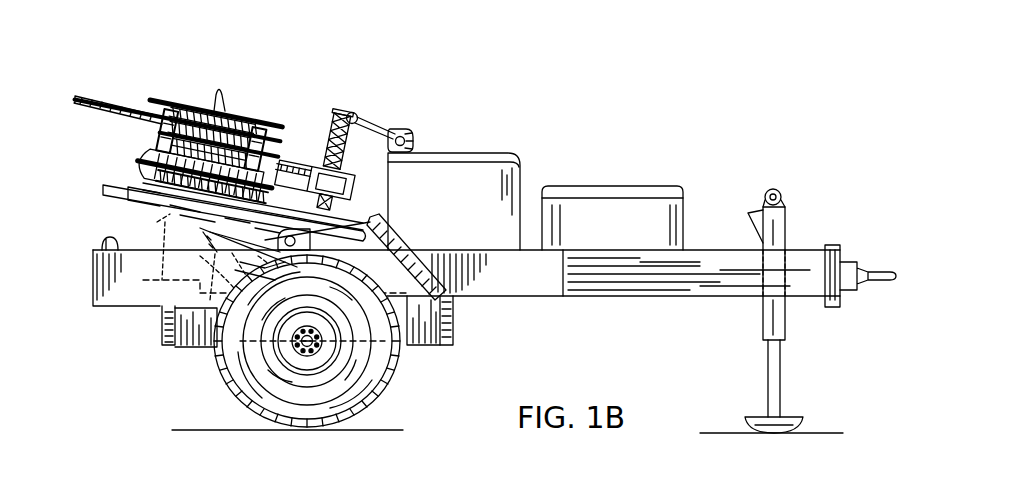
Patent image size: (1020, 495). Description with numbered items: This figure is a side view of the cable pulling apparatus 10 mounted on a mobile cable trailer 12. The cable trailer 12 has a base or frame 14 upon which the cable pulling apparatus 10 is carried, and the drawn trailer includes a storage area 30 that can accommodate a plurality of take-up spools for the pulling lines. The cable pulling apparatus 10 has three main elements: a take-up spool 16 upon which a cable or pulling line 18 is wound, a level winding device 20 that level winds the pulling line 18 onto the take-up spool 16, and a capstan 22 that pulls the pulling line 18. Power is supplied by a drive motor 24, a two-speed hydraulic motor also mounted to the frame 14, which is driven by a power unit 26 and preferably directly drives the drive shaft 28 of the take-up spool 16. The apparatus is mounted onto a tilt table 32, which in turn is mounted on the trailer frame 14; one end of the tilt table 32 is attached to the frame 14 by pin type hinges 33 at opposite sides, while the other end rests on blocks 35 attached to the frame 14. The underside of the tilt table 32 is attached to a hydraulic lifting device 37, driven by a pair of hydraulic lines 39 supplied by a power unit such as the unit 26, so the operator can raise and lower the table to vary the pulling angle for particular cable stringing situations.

The cable pulling apparatus 10 is at (194, 83).
The cable trailer 12 is at (606, 114).
The frame 14 is at (537, 285).
The take-up spool 16 is at (237, 110).
The pulling line 18 is at (110, 107).
The level winding device 20 is at (337, 106).
The capstan 22 is at (157, 157).
The drive motor 24 is at (160, 306).
The power unit 26 is at (500, 153).
The drive shaft 28 is at (157, 222).
The storage area 30 is at (622, 188).
The tilt table 32 is at (285, 258).
The pin type hinges 33 is at (370, 235).
The blocks 35 is at (209, 265).
The hydraulic lifting device 37 is at (162, 340).
The hydraulic lines 39 is at (197, 342).